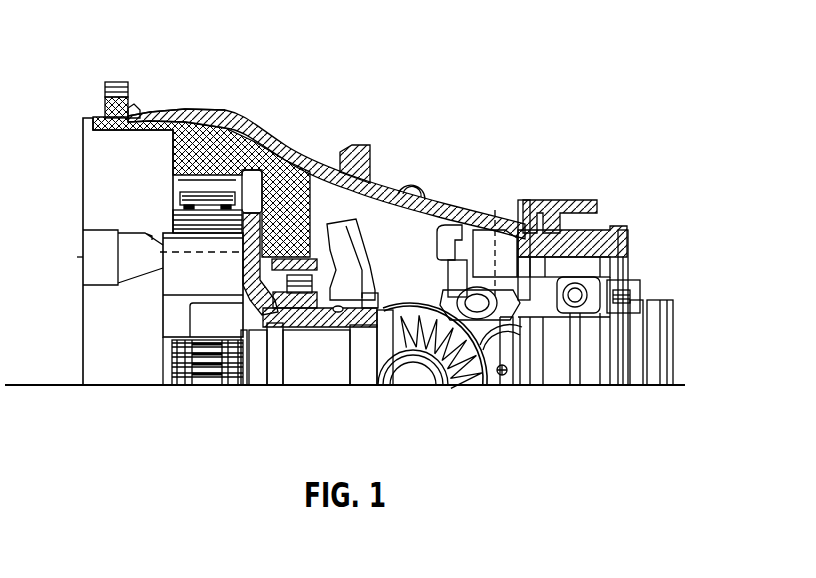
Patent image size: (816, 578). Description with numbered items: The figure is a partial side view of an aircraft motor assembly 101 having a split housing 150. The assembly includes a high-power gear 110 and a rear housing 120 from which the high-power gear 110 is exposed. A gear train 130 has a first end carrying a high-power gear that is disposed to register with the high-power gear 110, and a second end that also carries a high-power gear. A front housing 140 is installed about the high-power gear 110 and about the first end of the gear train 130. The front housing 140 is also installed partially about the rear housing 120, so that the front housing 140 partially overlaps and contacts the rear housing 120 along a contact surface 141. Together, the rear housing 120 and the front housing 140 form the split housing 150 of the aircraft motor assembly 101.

The aircraft motor assembly 101 is at (614, 148).
The high-power gear 110 is at (360, 240).
The rear housing 120 is at (100, 116).
The gear train 130 is at (440, 363).
The front housing 140 is at (254, 128).
The contact surface 141 is at (214, 125).
The split housing 150 is at (158, 110).